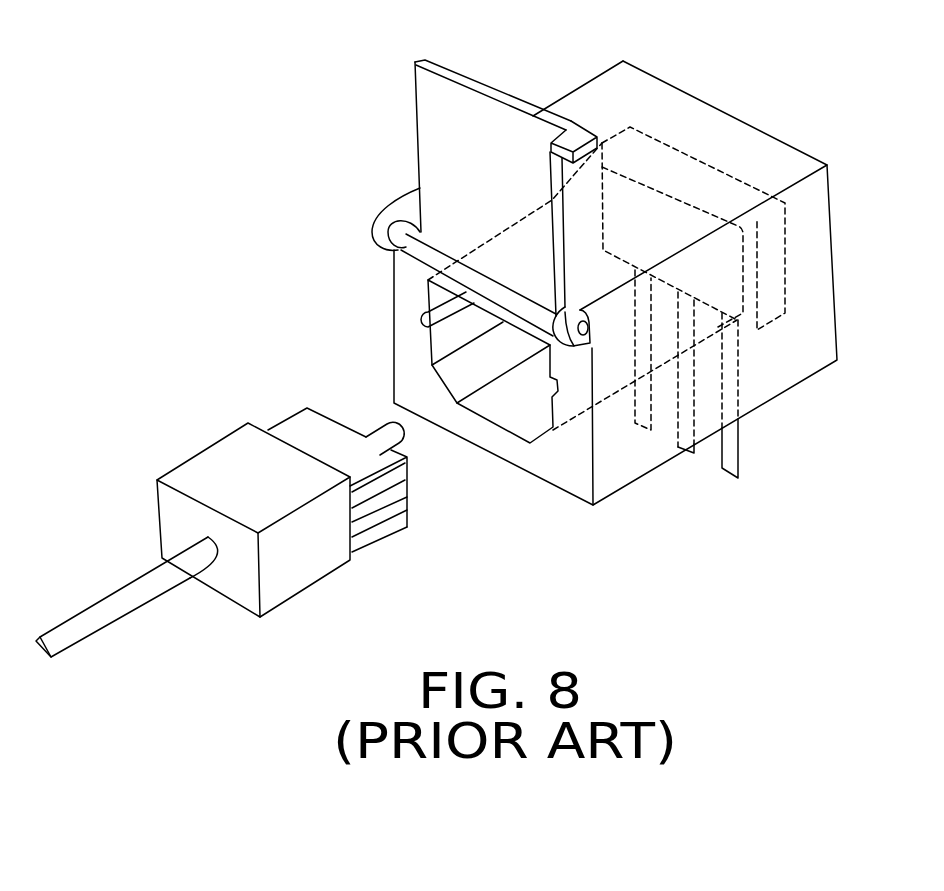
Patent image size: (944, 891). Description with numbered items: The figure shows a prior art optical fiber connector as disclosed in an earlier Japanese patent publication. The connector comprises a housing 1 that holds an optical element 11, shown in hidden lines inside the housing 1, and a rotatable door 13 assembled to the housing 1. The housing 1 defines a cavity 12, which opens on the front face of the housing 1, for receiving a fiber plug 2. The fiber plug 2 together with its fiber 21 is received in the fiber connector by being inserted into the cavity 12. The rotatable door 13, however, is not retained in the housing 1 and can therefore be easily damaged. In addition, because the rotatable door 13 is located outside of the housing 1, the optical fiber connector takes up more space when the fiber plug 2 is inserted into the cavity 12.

The housing 1 is at (603, 92).
The optical element 11 is at (725, 190).
The cavity 12 is at (503, 412).
The rotatable door 13 is at (448, 98).
The fiber plug 2 is at (217, 468).
The fiber 21 is at (382, 422).